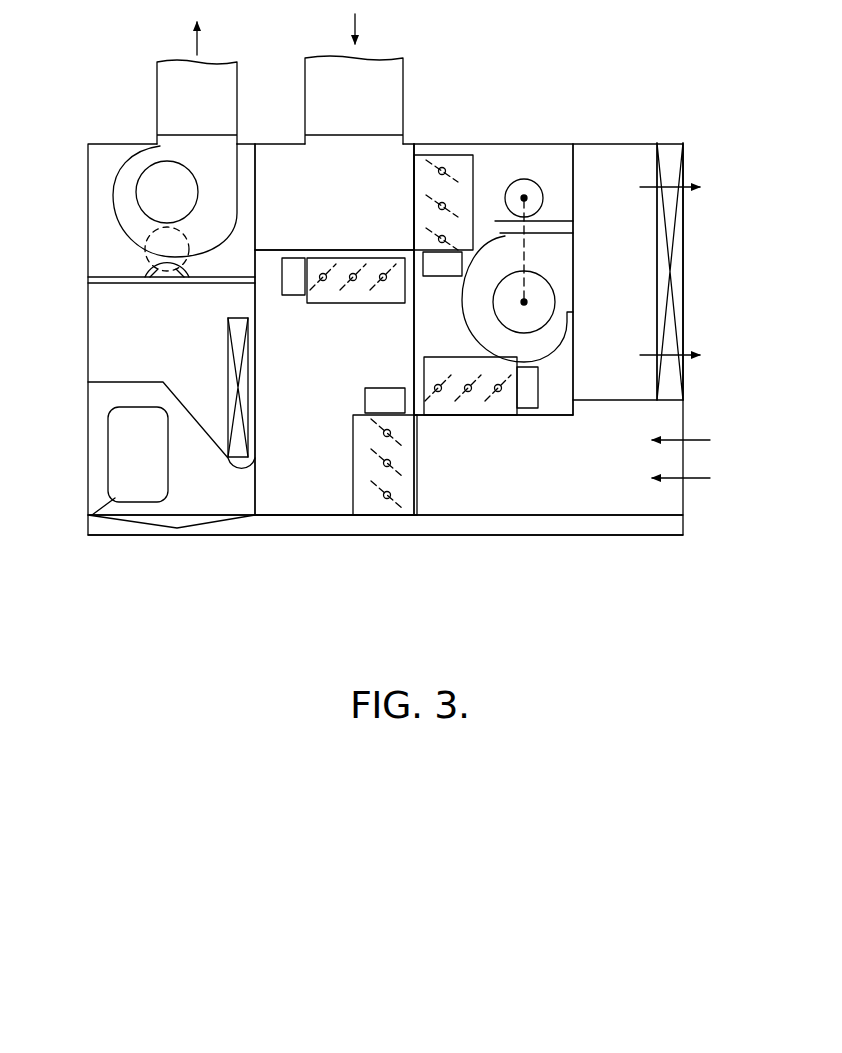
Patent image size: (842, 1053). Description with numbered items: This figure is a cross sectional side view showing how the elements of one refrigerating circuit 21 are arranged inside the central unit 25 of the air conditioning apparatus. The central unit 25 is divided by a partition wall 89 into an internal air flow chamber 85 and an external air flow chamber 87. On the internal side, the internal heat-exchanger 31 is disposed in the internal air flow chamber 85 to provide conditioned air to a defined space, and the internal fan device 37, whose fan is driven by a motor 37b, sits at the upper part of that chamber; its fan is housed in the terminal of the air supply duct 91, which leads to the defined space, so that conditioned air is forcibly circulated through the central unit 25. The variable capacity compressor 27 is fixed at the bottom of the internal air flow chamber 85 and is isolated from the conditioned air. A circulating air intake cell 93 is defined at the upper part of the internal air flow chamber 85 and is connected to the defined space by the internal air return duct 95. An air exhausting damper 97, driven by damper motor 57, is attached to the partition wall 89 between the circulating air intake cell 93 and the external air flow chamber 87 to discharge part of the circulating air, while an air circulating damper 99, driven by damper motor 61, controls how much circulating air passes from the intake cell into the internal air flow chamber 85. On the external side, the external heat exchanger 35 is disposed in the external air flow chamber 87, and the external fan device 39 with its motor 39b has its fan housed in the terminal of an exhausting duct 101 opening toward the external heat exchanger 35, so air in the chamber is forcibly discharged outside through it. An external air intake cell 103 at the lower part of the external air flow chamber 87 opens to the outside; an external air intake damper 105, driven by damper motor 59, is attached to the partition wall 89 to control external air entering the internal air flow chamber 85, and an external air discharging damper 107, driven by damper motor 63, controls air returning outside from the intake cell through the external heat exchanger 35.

The refrigerating circuit 21 is at (448, 138).
The central unit 25 is at (649, 133).
The variable capacity compressor 27 is at (122, 477).
The internal heat-exchanger 31 is at (227, 365).
The external heat exchanger 35 is at (683, 250).
The internal fan device 37 is at (124, 205).
The motor 37b is at (145, 259).
The external fan device 39 is at (552, 210).
The motor 39b is at (533, 188).
The damper motor 57 is at (441, 265).
The damper motor 59 is at (365, 397).
The damper motor 61 is at (297, 297).
The damper motor 63 is at (533, 398).
The internal air flow chamber 85 is at (332, 495).
The external air flow chamber 87 is at (623, 383).
The partition wall 89 is at (413, 353).
The air supply duct 91 is at (157, 105).
The circulating air intake cell 93 is at (277, 172).
The internal air return duct 95 is at (403, 83).
The air exhausting damper 97 is at (467, 167).
The air circulating damper 99 is at (345, 264).
The exhausting duct 101 is at (558, 252).
The external air intake cell 103 is at (620, 497).
The external air intake damper 105 is at (403, 505).
The external air discharging damper 107 is at (503, 405).